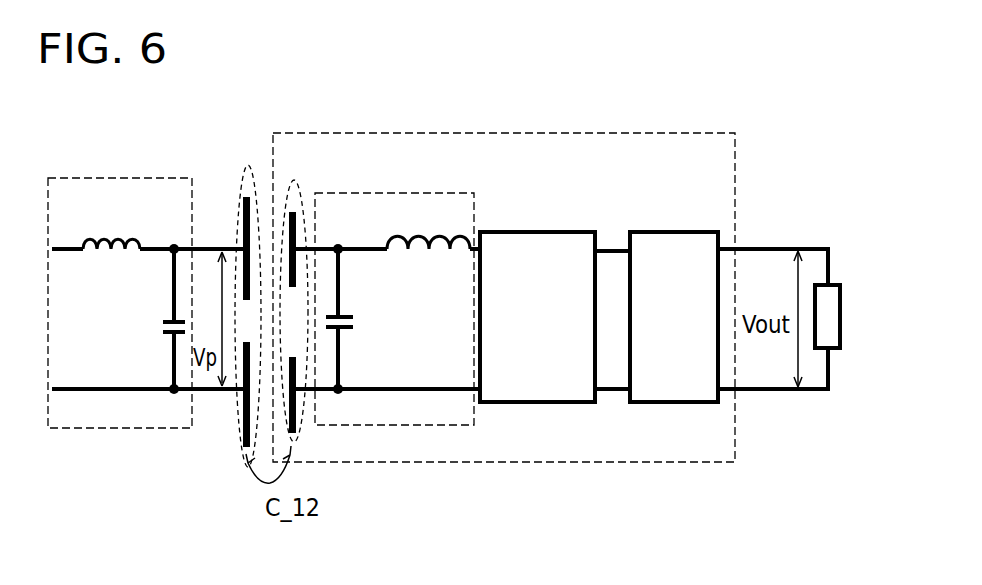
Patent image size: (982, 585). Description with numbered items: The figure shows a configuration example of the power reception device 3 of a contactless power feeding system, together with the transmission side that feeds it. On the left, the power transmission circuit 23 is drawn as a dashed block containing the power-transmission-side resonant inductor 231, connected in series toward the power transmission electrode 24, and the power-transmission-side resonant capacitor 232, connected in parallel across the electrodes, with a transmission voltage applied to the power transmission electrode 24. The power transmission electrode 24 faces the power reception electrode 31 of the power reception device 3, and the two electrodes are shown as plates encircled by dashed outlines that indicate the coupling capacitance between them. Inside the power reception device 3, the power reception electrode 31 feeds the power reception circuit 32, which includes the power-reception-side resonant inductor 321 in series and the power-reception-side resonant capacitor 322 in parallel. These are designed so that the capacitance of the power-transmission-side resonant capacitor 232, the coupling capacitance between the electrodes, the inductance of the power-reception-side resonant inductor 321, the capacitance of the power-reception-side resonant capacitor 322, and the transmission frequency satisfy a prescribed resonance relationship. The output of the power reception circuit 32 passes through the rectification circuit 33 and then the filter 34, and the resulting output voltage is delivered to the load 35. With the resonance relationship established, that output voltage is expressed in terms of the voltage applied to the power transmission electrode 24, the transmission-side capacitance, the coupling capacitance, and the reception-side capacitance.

The power reception device 3 is at (508, 133).
The power transmission circuit 23 is at (93, 178).
The power transmission electrode 24 is at (243, 192).
The power reception electrode 31 is at (292, 210).
The power reception circuit 32 is at (325, 193).
The rectification circuit 33 is at (505, 232).
The filter 34 is at (658, 232).
The load 35 is at (832, 285).
The power-transmission-side resonant inductor 231 is at (107, 236).
The power-transmission-side resonant capacitor 232 is at (160, 318).
The power-reception-side resonant inductor 321 is at (413, 247).
The power-reception-side resonant capacitor 322 is at (345, 314).